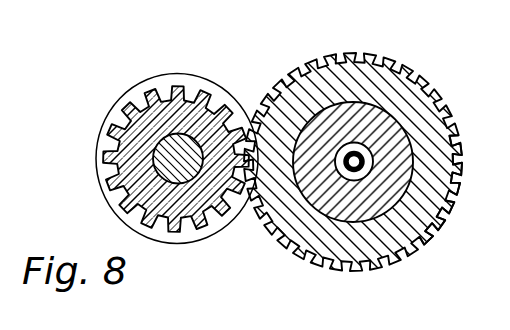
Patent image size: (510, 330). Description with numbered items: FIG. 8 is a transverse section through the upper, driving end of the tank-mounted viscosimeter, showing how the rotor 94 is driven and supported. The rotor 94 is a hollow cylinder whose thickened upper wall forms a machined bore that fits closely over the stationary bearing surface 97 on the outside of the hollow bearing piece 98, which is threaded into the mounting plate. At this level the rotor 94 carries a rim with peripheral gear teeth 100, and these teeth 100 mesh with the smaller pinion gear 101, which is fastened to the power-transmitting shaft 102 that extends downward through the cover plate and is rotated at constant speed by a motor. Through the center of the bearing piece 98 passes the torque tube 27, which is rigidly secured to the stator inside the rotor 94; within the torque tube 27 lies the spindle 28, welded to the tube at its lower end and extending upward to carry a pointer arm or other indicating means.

The torque tube 27 is at (351, 152).
The spindle 28 is at (357, 152).
The rotor 94 is at (402, 95).
The stationary bearing surface 97 is at (398, 124).
The hollow bearing piece 98 is at (448, 189).
The peripheral gear teeth 100 is at (428, 233).
The pinion gear 101 is at (110, 140).
The power-transmitting shaft 102 is at (163, 169).